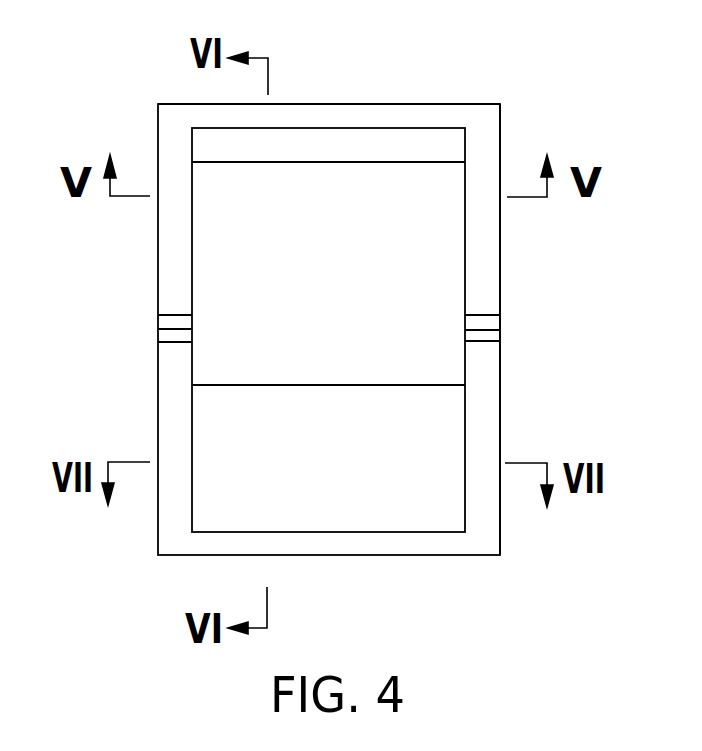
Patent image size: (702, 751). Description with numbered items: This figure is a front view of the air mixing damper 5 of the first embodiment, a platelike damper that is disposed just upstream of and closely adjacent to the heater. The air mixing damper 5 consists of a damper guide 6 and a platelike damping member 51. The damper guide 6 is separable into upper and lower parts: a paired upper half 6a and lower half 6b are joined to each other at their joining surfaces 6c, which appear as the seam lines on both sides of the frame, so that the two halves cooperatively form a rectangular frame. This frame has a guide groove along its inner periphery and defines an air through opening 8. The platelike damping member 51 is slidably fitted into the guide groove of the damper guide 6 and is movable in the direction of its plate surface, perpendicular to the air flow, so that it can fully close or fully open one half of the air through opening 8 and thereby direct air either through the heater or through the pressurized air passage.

The air mixing damper 5 is at (128, 232).
The damper guide 6 is at (415, 122).
The upper half 6a is at (157, 106).
The lower half 6b is at (500, 405).
The joining surfaces 6c is at (172, 323).
The air through opening 8 is at (362, 153).
The damping member 51 is at (427, 183).